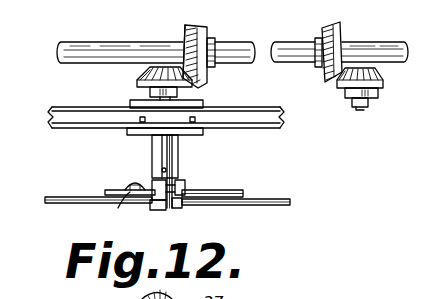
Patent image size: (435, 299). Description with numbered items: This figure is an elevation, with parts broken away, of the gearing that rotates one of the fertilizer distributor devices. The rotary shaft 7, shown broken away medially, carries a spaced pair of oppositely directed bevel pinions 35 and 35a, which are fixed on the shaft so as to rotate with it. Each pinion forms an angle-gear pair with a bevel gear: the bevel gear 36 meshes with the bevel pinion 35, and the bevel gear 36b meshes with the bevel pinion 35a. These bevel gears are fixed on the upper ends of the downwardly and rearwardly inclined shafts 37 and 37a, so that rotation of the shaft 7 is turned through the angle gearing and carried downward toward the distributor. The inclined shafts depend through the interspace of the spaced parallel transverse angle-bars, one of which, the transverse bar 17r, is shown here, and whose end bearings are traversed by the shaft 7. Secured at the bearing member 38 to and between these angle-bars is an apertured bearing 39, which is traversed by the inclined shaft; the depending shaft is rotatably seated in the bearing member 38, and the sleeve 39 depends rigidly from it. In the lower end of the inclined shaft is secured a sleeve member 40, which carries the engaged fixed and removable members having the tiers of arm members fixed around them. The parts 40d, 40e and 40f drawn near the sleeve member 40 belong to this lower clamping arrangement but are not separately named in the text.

The rotary shaft 7 is at (116, 45).
The bevel pinion 35 is at (335, 29).
The bevel pinion 35a is at (207, 70).
The bevel gear 36 is at (377, 79).
The bevel gear 36b is at (192, 88).
The inclined shaft 37 is at (366, 104).
The inclined shaft 37a is at (138, 100).
The bearing member 38 is at (133, 133).
The apertured bearing 39 is at (180, 157).
The sleeve member 40 is at (131, 185).
The slide bar 40d is at (70, 199).
The slide block 40e is at (165, 204).
The spring 40f is at (130, 192).
The transverse bar 17r is at (96, 122).